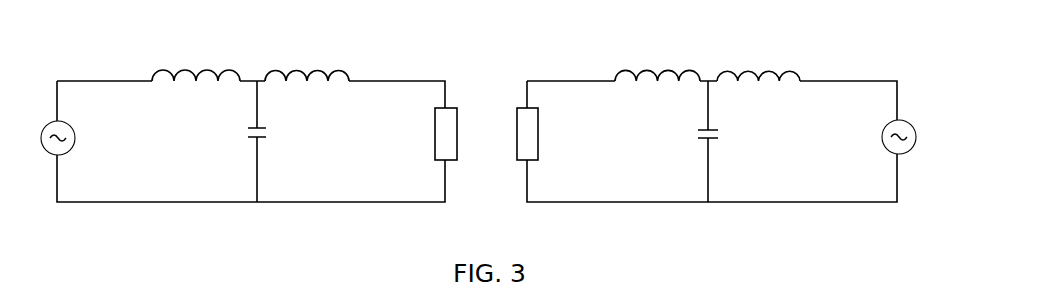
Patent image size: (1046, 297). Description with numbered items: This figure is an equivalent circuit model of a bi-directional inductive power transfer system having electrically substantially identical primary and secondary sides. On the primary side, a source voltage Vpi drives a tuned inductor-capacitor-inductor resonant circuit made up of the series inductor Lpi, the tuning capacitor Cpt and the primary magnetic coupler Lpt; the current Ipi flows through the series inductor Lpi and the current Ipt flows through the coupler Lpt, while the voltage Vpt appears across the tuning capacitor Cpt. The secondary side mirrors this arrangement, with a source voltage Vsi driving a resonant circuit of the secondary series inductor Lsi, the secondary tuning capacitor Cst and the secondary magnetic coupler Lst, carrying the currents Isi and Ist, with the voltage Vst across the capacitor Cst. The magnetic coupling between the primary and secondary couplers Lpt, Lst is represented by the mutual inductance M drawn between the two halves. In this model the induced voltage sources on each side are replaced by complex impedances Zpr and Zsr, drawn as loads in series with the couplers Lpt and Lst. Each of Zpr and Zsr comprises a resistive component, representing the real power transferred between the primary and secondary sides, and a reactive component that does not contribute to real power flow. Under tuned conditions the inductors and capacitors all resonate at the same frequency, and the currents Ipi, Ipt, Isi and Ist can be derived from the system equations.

The primary input current Ipi is at (112, 64).
The series inductor Lpi is at (196, 57).
The primary magnetic coupler Lpt is at (307, 60).
The primary tank current Ipt is at (416, 65).
The tuning capacitor Cpt is at (275, 141).
The primary reflected complex impedance Zpr is at (416, 134).
The primary input voltage Vpi is at (92, 116).
The primary induced voltage source Vpt is at (243, 112).
The mutual inductance M is at (497, 138).
The secondary reflected complex impedance Zsr is at (548, 134).
The secondary tank current Ist is at (560, 65).
The secondary magnetic coupler Lst is at (657, 60).
The secondary tuning capacitor Cst is at (693, 141).
The secondary series inductor Lsi is at (758, 60).
The secondary input current Isi is at (846, 65).
The secondary induced voltage source Vst is at (724, 112).
The secondary input voltage Vsi is at (878, 112).